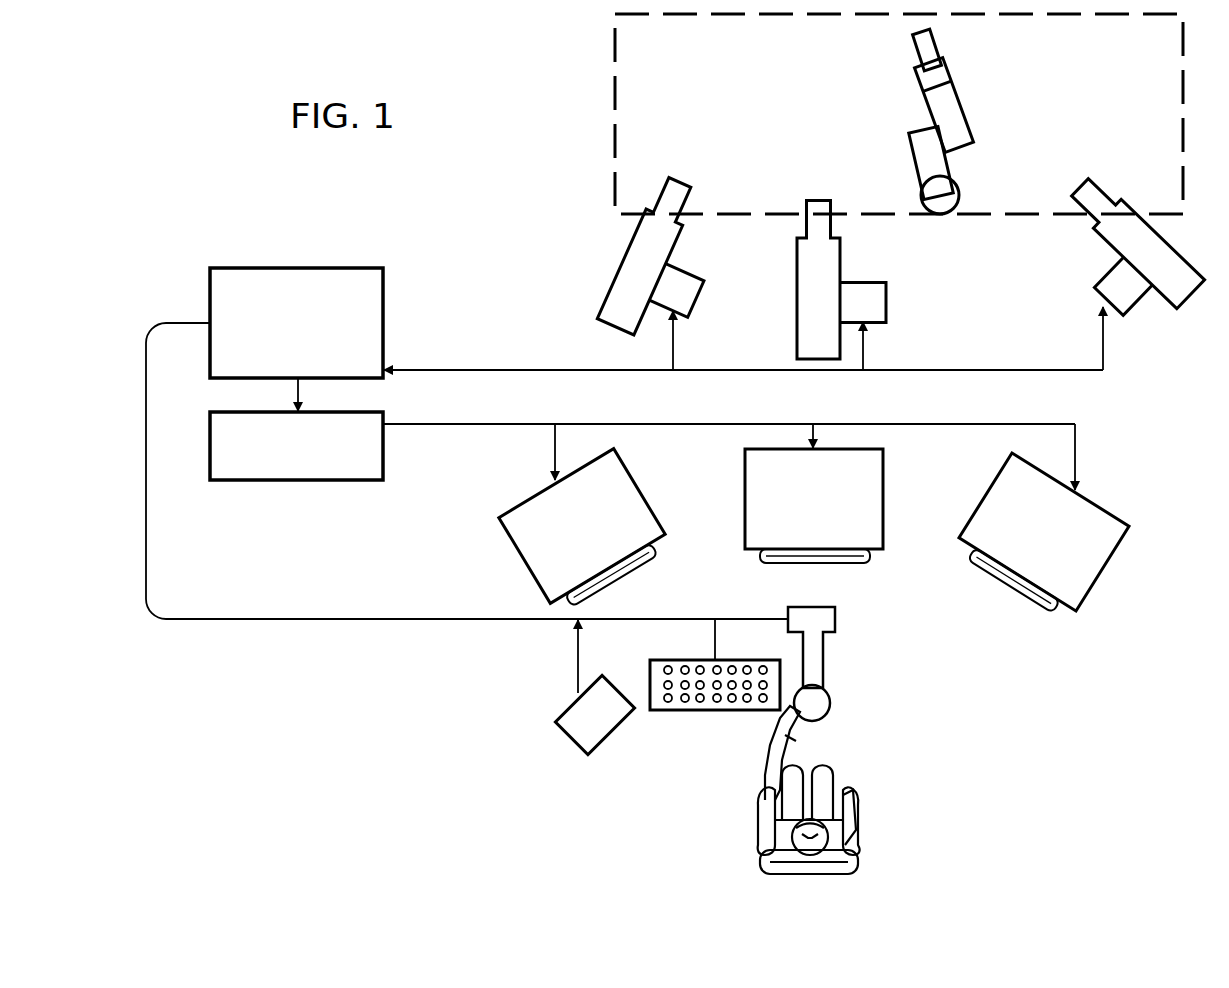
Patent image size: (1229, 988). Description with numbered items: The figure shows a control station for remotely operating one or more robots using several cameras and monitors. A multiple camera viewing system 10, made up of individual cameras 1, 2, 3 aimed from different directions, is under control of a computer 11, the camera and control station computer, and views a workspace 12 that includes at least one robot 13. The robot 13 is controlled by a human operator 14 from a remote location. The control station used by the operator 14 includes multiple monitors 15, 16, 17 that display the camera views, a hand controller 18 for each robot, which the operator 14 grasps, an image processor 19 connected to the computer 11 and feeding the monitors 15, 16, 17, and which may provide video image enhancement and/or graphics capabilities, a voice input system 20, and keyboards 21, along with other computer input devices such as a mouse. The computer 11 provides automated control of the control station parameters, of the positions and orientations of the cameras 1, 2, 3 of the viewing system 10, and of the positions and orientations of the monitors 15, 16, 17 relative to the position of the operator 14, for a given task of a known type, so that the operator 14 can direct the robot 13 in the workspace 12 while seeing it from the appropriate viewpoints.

The first camera 1 is at (650, 271).
The second camera 2 is at (824, 295).
The third camera 3 is at (1156, 263).
The multiple camera viewing system 10 is at (570, 252).
The computer 11 is at (219, 291).
The workspace 12 is at (617, 112).
The robot 13 is at (940, 112).
The human operator 14 is at (872, 802).
The monitor 15 is at (592, 543).
The monitor 16 is at (826, 508).
The monitor 17 is at (1057, 541).
The hand controller 18 is at (813, 658).
The image processor 19 is at (283, 481).
The voice input system 20 is at (585, 718).
The keyboards 21 is at (705, 702).